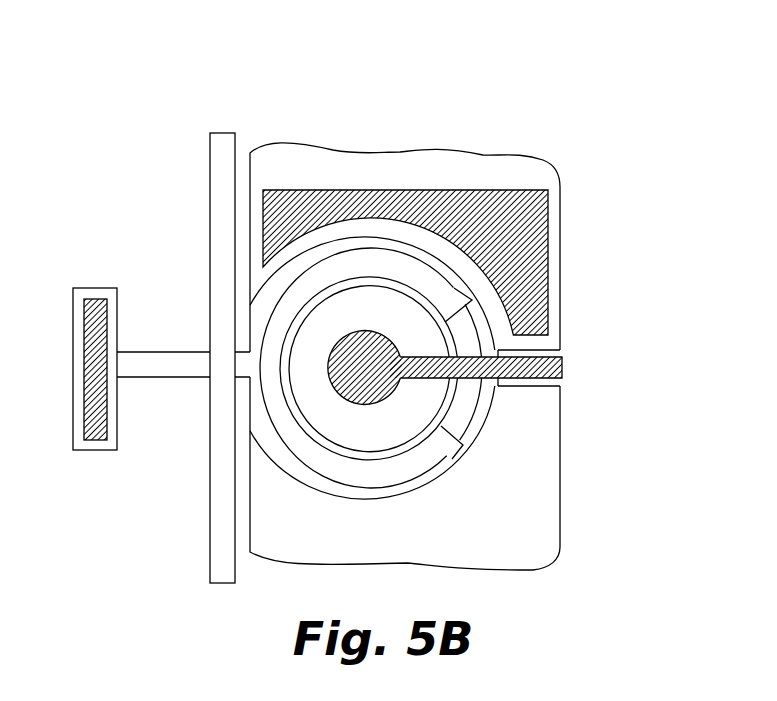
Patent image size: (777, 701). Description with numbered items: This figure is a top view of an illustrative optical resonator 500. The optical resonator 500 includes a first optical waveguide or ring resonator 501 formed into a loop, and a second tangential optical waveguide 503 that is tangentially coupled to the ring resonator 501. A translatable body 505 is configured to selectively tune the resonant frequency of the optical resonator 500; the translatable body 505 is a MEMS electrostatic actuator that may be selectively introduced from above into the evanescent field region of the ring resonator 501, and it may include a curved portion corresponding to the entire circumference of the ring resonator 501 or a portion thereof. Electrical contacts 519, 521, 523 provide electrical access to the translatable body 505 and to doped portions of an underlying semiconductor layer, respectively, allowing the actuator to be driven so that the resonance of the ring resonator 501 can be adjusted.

The optical resonator 500 is at (122, 122).
The ring resonator 501 is at (480, 381).
The second tangential optical waveguide 503 is at (212, 133).
The translatable body 505 is at (377, 263).
The electrical contact 519 is at (76, 306).
The electrical contact 521 is at (562, 367).
The electrical contact 523 is at (548, 262).